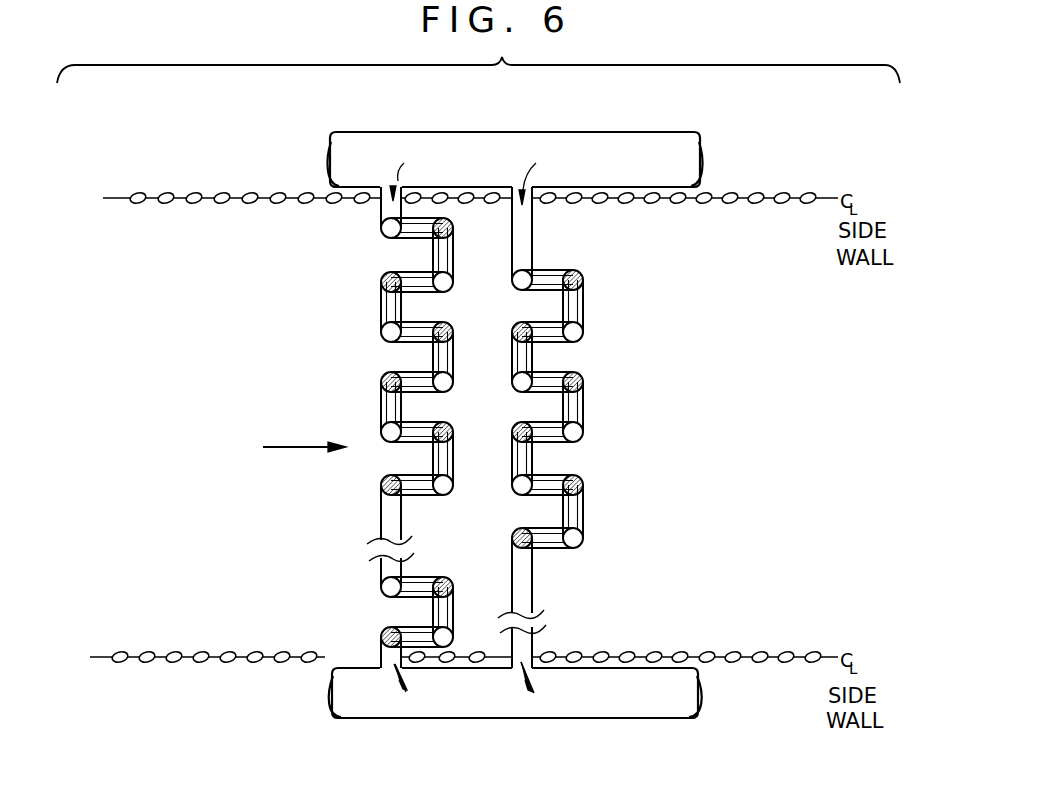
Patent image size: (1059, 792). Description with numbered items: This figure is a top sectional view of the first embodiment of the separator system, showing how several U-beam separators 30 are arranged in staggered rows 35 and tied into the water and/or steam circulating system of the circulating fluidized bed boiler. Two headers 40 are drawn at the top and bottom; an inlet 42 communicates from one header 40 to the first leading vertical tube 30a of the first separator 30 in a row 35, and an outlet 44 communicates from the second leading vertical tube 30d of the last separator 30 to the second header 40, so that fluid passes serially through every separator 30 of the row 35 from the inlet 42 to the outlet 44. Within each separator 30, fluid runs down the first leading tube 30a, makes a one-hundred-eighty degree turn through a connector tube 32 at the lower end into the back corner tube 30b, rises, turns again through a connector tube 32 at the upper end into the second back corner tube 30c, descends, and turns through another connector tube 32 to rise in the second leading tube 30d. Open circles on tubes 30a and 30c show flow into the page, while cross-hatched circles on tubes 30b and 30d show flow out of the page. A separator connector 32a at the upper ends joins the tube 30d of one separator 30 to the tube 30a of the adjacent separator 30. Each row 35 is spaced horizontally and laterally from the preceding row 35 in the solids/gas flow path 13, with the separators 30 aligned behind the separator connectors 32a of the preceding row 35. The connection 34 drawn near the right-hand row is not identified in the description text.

The solids/gas flow path 13 is at (284, 447).
The separator 30 is at (438, 383).
The first leading vertical tube 30a is at (378, 228).
The back corner tube 30b is at (451, 223).
The second back corner tube 30c is at (447, 288).
The second leading vertical tube 30d is at (380, 280).
The connector tube 32 is at (422, 212).
The separator connector 32a is at (378, 306).
The tube loop 34 is at (548, 268).
The row 35 is at (581, 358).
The header 40 is at (648, 145).
The inlet 42 is at (390, 176).
The outlet 44 is at (388, 670).